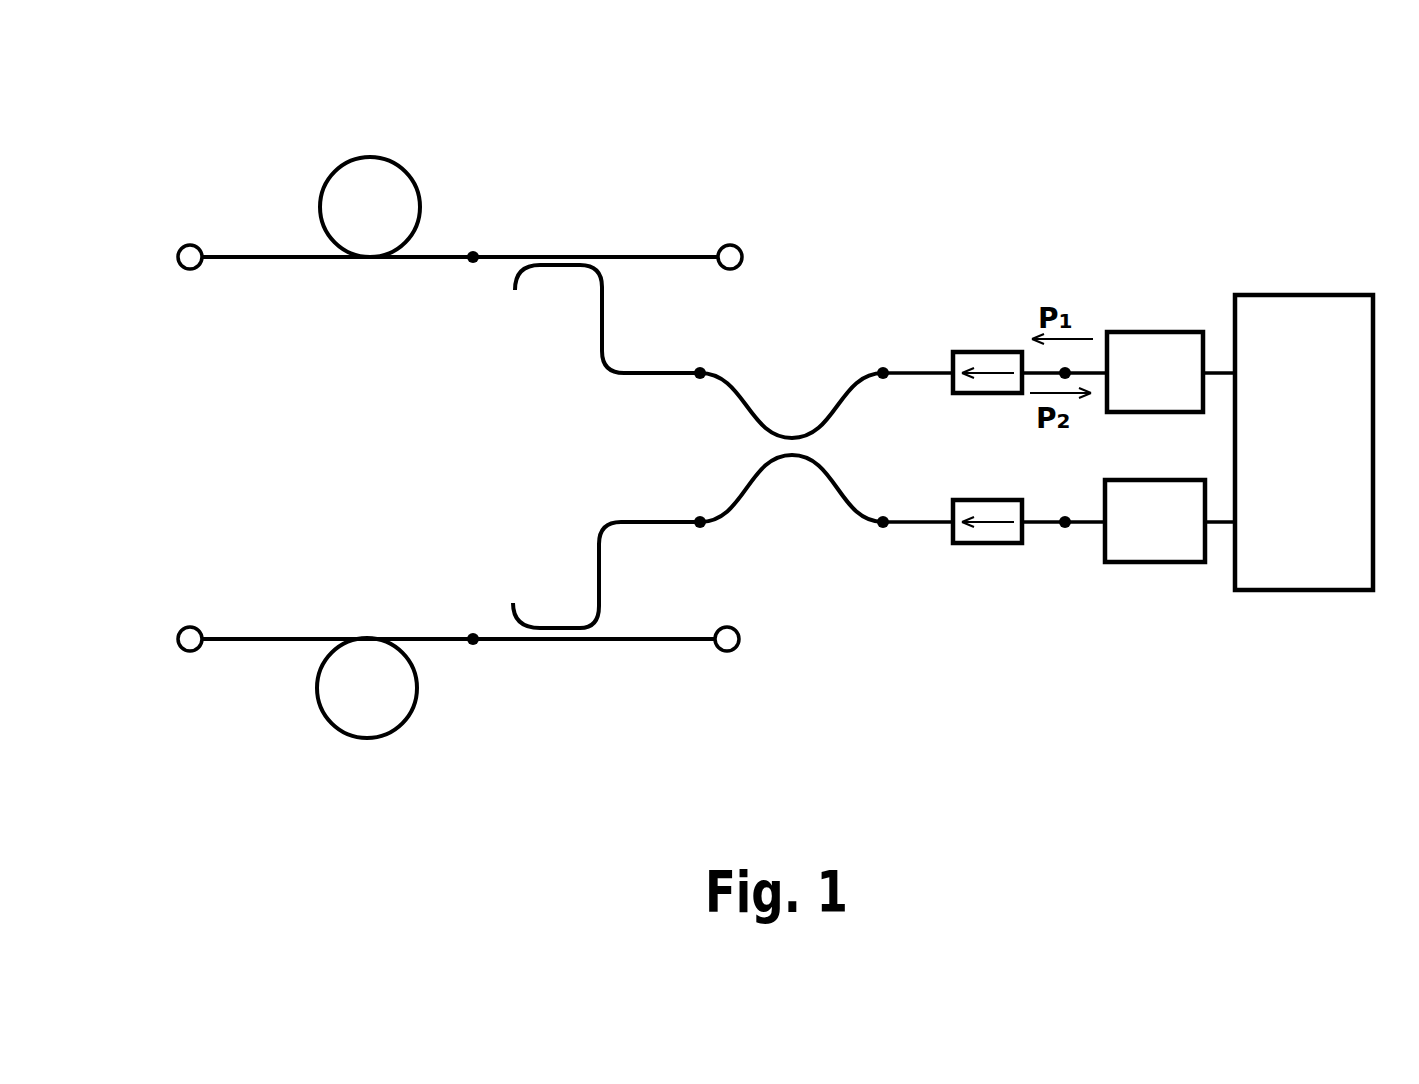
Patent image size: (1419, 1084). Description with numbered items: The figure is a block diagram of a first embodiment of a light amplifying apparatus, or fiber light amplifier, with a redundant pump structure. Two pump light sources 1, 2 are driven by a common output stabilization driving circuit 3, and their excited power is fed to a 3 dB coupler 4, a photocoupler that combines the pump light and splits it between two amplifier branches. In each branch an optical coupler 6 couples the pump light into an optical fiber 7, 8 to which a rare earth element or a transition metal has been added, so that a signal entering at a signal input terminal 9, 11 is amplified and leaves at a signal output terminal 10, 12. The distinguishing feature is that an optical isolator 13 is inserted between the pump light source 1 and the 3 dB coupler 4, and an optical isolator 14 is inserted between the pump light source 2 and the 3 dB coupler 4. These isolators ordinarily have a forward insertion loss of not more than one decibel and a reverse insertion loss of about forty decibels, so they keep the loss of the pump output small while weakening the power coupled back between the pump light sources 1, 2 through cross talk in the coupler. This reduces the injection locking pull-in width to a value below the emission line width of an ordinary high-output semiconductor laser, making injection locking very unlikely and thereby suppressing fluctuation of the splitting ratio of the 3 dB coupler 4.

The pump light source 1 is at (547, 257).
The pump light source 2 is at (1153, 562).
The output stabilization driving circuit 3 is at (1285, 295).
The 3 dB coupler 4 is at (743, 380).
The optical coupler 6 is at (585, 640).
The optical fiber with rare earth element added 7 is at (371, 157).
The optical fiber with rare earth element added 8 is at (345, 736).
The signal input terminal 9 is at (193, 246).
The signal output terminal 10 is at (733, 245).
The signal input terminal 11 is at (193, 627).
The signal output terminal 12 is at (722, 651).
The optical isolator 13 is at (975, 352).
The optical isolator 14 is at (975, 543).